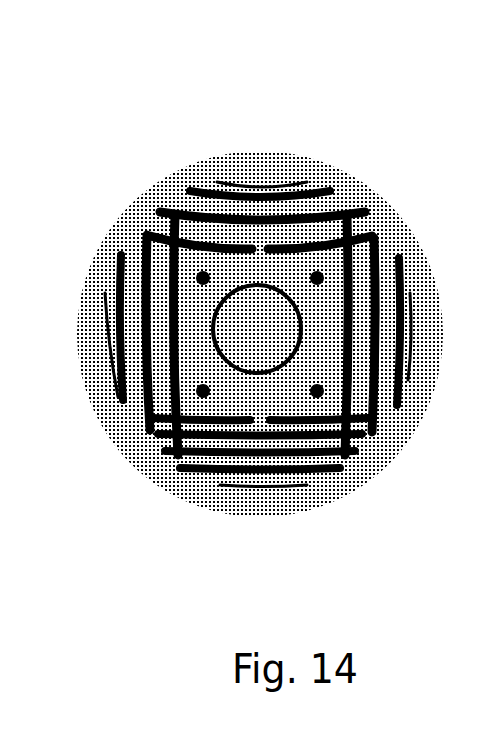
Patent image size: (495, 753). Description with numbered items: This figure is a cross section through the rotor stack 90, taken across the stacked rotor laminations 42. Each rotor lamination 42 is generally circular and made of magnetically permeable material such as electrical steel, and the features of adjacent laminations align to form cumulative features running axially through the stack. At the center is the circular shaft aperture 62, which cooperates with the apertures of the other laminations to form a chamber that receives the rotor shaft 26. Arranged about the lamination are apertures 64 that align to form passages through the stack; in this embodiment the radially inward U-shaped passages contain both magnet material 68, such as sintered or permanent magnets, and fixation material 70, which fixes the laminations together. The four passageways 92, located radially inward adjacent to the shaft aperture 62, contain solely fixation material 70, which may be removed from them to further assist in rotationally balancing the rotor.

The stack 90 is at (240, 319).
The rotor lamination 42 is at (265, 522).
The rotor shaft 26 is at (297, 325).
The passageways 92 is at (203, 278).
The magnet material 68 is at (138, 242).
The fixation material 70 is at (107, 344).
The apertures 64 is at (172, 412).
The shaft aperture 62 is at (308, 358).